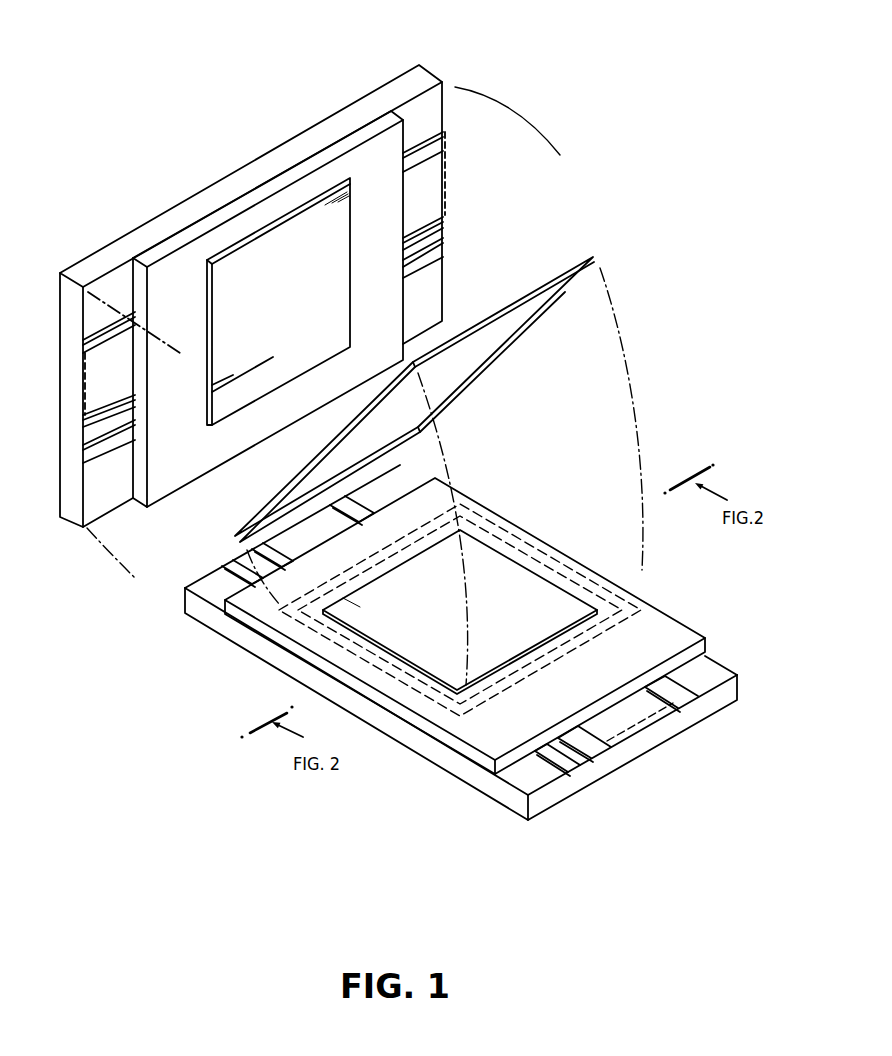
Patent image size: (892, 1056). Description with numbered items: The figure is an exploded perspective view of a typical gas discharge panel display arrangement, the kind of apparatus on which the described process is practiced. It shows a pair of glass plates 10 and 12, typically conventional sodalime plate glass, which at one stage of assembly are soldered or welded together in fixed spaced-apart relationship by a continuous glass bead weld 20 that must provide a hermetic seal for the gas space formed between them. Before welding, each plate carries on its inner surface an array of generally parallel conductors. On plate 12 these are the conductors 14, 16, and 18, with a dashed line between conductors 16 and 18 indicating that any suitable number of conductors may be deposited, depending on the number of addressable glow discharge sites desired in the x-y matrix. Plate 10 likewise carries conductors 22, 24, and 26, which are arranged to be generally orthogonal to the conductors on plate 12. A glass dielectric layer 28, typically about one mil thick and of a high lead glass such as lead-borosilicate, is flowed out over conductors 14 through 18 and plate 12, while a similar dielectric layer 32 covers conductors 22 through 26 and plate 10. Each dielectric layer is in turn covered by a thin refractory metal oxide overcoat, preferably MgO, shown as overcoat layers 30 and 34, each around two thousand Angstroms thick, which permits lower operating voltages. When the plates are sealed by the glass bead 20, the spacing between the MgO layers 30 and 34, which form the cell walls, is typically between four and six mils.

The glass plate 10 is at (427, 77).
The glass plate 12 is at (732, 692).
The conductor 14 is at (573, 762).
The conductor 16 is at (603, 750).
The conductor 18 is at (687, 703).
The glass bead weld 20 is at (594, 257).
The conductor 22 is at (443, 250).
The conductor 24 is at (442, 223).
The conductor 26 is at (441, 143).
The dielectric layer 28 is at (655, 622).
The metal oxide overcoat layer 30 is at (525, 573).
The dielectric layer 32 is at (213, 237).
The metal oxide overcoat layer 34 is at (253, 247).